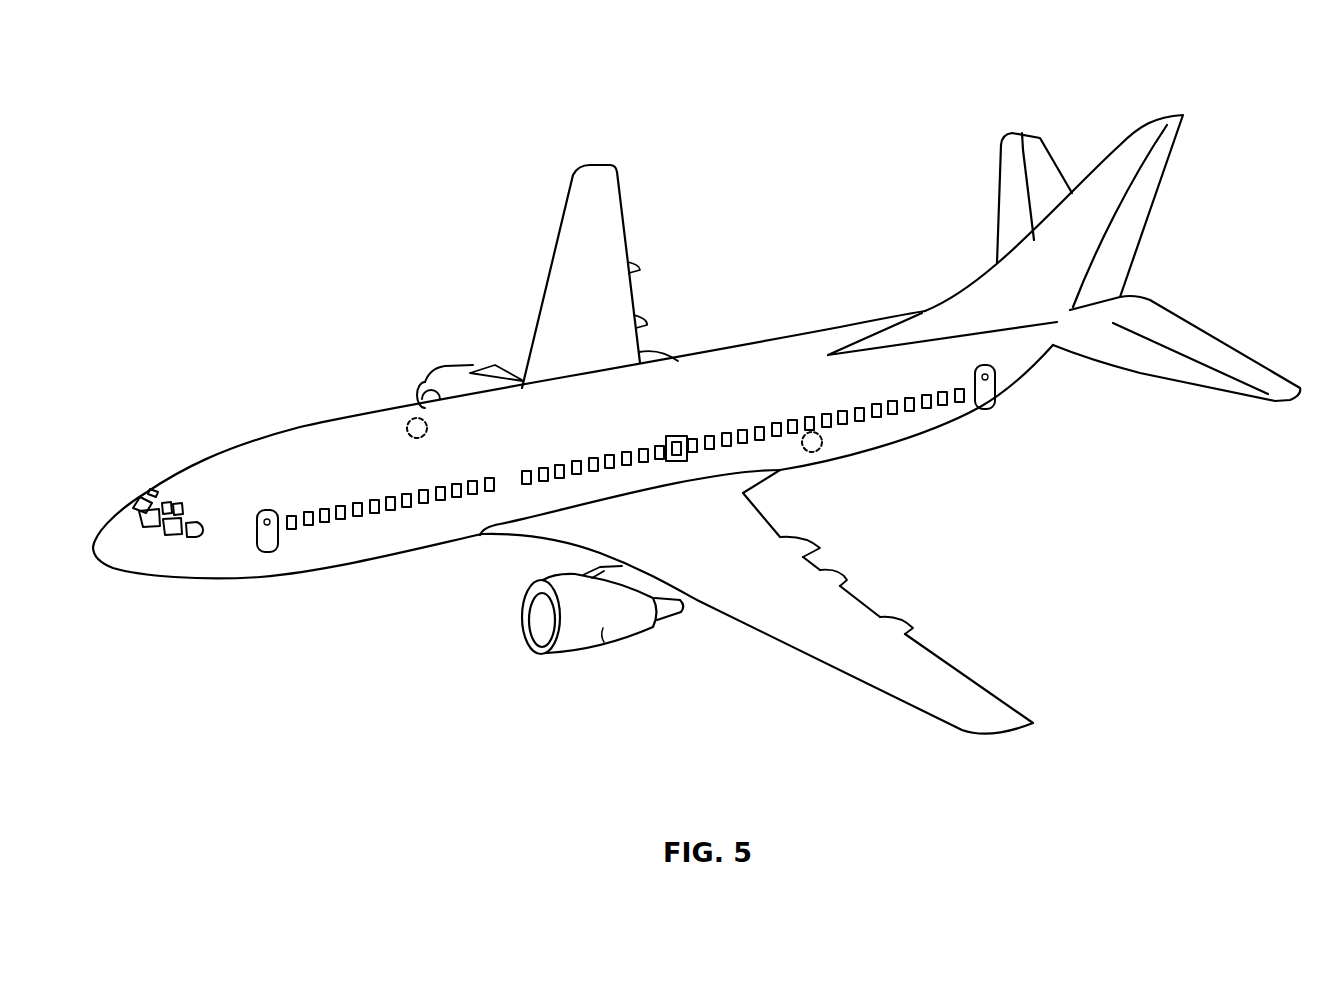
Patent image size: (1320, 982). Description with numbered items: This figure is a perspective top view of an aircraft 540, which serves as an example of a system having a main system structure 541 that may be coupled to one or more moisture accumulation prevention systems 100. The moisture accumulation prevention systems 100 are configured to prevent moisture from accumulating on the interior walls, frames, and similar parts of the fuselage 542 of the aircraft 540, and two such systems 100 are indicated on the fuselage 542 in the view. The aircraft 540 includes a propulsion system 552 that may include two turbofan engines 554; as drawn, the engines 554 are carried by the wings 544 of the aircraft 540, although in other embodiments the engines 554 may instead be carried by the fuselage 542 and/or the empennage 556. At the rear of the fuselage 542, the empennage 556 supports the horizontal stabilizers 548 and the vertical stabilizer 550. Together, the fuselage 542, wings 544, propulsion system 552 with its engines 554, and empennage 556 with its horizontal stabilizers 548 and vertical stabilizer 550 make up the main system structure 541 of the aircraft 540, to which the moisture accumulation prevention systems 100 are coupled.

The moisture accumulation prevention system 100 is at (417, 416).
The aircraft 540 is at (252, 252).
The main system structure 541 is at (252, 412).
The fuselage 542 is at (320, 560).
The wings 544 is at (598, 170).
The horizontal stabilizers 548 is at (1023, 138).
The vertical stabilizer 550 is at (1163, 122).
The propulsion system 552 is at (458, 716).
The turbofan engines 554 is at (453, 375).
The empennage 556 is at (858, 300).